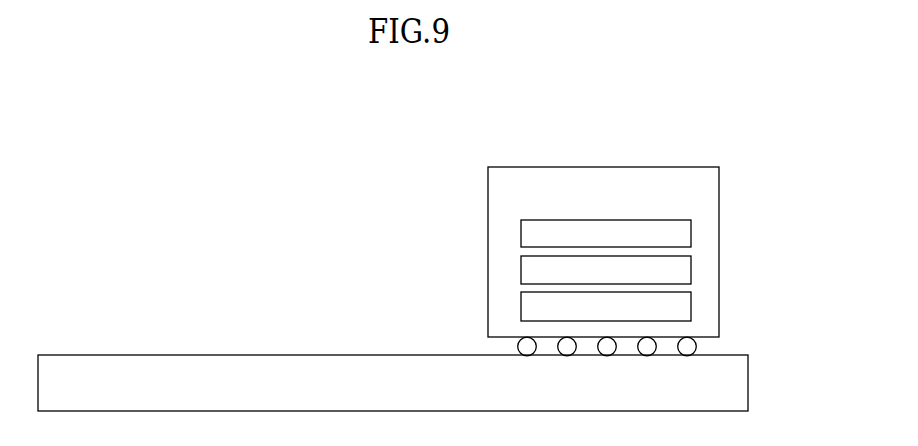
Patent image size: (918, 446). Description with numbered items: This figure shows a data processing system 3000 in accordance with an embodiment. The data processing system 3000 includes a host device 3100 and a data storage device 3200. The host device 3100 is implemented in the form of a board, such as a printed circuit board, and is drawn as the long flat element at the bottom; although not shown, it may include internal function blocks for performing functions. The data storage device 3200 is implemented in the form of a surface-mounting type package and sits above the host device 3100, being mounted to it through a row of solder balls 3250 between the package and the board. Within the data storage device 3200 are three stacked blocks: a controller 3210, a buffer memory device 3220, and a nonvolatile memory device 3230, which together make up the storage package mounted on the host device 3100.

The data processing system 3000 is at (98, 108).
The host device 3100 is at (393, 383).
The data storage device 3200 is at (603, 252).
The controller 3210 is at (606, 234).
The buffer memory device 3220 is at (606, 270).
The nonvolatile memory device 3230 is at (606, 307).
The solder balls 3250 is at (704, 348).